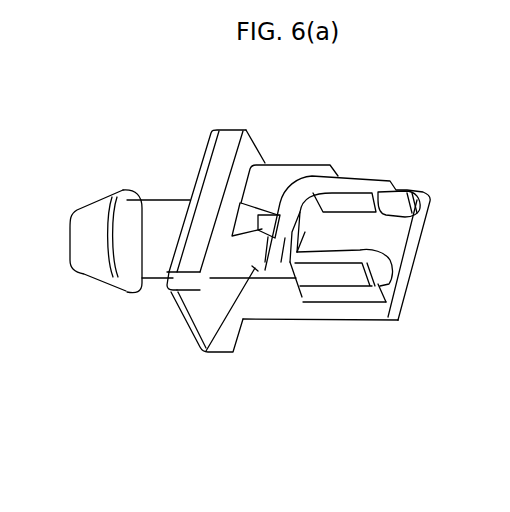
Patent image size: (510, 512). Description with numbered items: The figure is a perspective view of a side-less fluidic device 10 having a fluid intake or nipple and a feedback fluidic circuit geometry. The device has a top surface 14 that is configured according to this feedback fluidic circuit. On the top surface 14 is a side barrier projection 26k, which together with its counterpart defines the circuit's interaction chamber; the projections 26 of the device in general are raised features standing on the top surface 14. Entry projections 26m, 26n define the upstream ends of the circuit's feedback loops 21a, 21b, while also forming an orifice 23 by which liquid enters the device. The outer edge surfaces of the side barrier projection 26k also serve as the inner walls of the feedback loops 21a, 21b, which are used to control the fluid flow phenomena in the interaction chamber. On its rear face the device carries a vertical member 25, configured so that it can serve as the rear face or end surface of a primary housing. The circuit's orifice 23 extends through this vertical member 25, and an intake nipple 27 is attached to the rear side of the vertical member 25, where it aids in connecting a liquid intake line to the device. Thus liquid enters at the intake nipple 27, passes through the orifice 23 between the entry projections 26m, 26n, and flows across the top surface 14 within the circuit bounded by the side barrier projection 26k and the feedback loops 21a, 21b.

The clip assembly 10 is at (143, 113).
The vertical member 25 is at (228, 129).
The entry projection 26n is at (273, 174).
The frame 26 is at (365, 183).
The feedback loop 21b is at (413, 188).
The top surface 14 is at (395, 234).
The intake nipple 27 is at (106, 276).
The orifice 23 is at (262, 232).
The entry projection 26m is at (205, 352).
The side barrier projection 26k is at (363, 250).
The feedback loop 21a is at (358, 294).